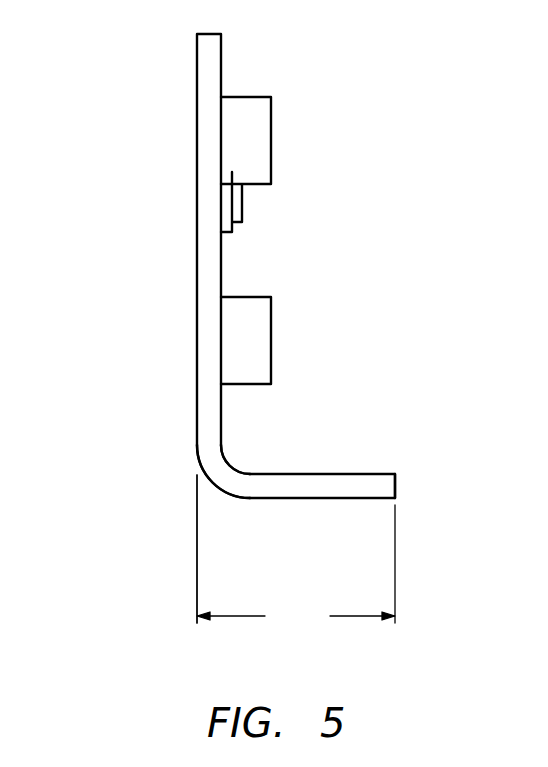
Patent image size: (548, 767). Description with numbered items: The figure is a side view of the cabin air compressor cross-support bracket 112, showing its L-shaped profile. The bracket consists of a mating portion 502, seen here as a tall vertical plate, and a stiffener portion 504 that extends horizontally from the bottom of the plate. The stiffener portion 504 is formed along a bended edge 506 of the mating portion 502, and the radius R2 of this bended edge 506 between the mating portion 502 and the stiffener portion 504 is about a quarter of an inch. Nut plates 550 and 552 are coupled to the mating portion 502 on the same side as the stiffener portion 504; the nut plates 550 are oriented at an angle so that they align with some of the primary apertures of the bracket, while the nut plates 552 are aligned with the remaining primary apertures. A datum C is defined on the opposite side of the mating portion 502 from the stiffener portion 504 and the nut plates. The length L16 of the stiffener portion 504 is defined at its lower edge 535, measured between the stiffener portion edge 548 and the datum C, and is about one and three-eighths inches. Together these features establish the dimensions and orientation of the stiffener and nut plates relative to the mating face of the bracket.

The cross-support bracket 112 is at (88, 136).
The mating portion 502 is at (210, 258).
The stiffener portion 504 is at (335, 473).
The bended edge 506 is at (226, 452).
The lower edge 535 is at (218, 505).
The stiffener portion edge 548 is at (395, 485).
The nut plates 550 is at (250, 110).
The nut plates 552 is at (248, 312).
The radius of the bended edge R2 is at (233, 461).
The length of the stiffener portion L16 is at (296, 554).
The datum C is at (197, 574).